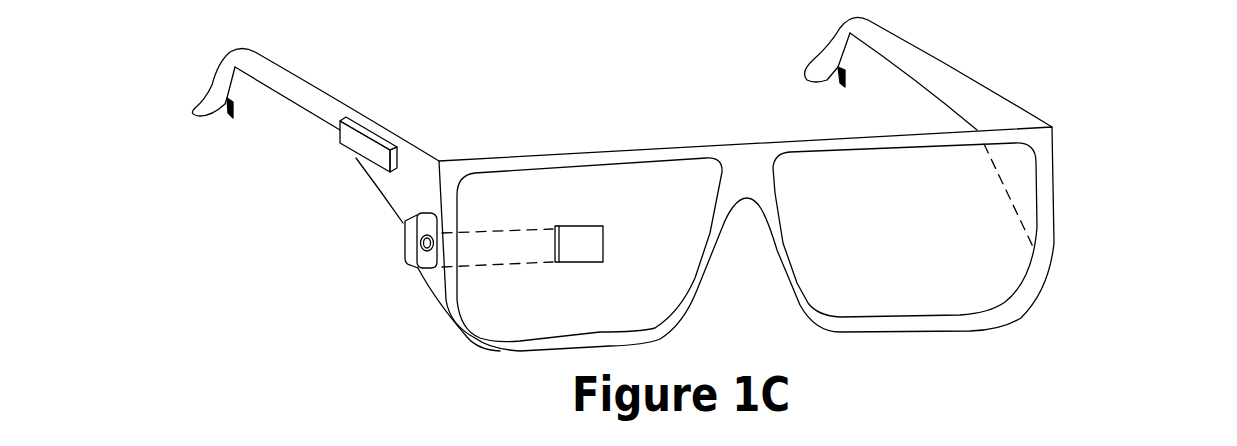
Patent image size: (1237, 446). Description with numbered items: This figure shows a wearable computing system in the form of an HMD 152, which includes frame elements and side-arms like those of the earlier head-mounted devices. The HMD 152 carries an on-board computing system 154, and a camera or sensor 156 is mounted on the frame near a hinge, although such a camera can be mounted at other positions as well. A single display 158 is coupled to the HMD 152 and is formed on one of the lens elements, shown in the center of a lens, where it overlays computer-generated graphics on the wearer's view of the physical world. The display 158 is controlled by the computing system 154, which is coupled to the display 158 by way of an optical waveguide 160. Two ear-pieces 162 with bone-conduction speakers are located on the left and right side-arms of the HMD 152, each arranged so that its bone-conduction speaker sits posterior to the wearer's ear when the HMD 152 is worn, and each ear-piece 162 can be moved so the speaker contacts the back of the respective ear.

The HMD 152 is at (1123, 208).
The on-board computing system 154 is at (356, 145).
The hinge camera / sensor 156 is at (407, 247).
The display 158 is at (575, 263).
The optical waveguide 160 is at (483, 266).
The ear-pieces 162 is at (255, 105).